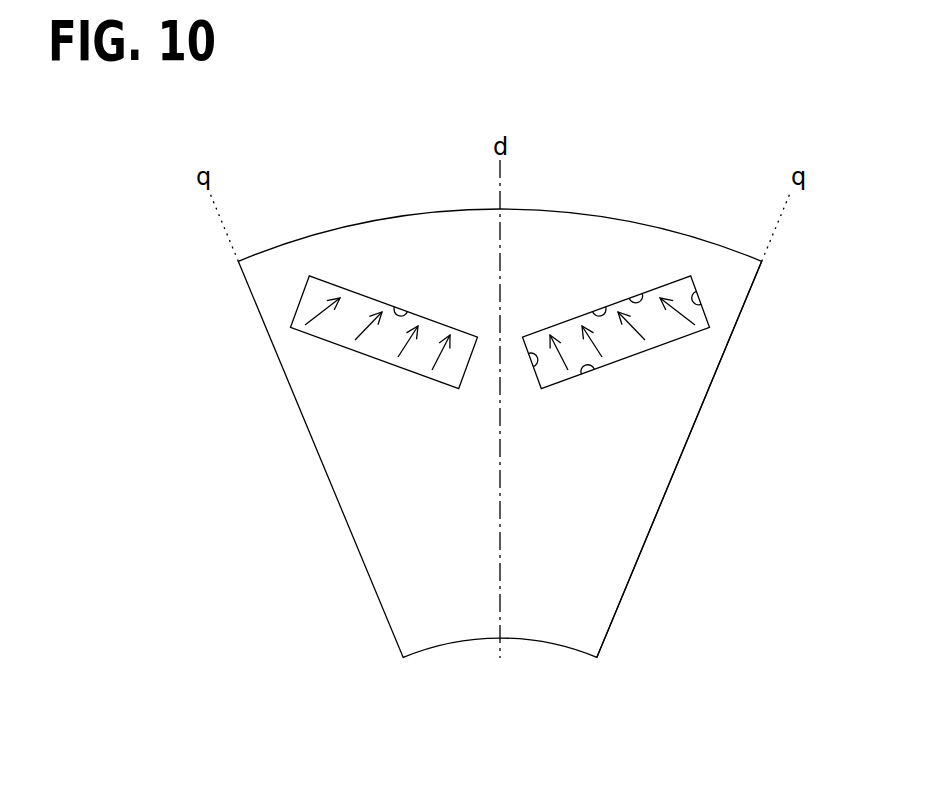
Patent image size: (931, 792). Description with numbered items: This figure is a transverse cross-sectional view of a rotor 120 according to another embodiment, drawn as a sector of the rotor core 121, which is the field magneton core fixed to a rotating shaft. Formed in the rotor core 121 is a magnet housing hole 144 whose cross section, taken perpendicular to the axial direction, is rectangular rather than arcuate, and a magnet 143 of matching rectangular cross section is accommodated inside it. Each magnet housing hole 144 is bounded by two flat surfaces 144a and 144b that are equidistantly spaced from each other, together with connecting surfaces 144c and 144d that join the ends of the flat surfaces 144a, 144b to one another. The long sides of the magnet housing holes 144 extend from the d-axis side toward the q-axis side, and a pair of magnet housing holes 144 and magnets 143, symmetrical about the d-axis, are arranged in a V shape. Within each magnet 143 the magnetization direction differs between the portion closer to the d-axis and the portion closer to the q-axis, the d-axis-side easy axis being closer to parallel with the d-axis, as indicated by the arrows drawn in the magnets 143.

The rotor 120 is at (703, 203).
The rotor core 121 is at (666, 492).
The magnet 143 is at (378, 359).
The magnet housing hole 144 is at (394, 306).
The flat surface 144a is at (640, 292).
The flat surface 144b is at (587, 372).
The connecting surface 144c is at (700, 299).
The connecting surface 144d is at (531, 366).